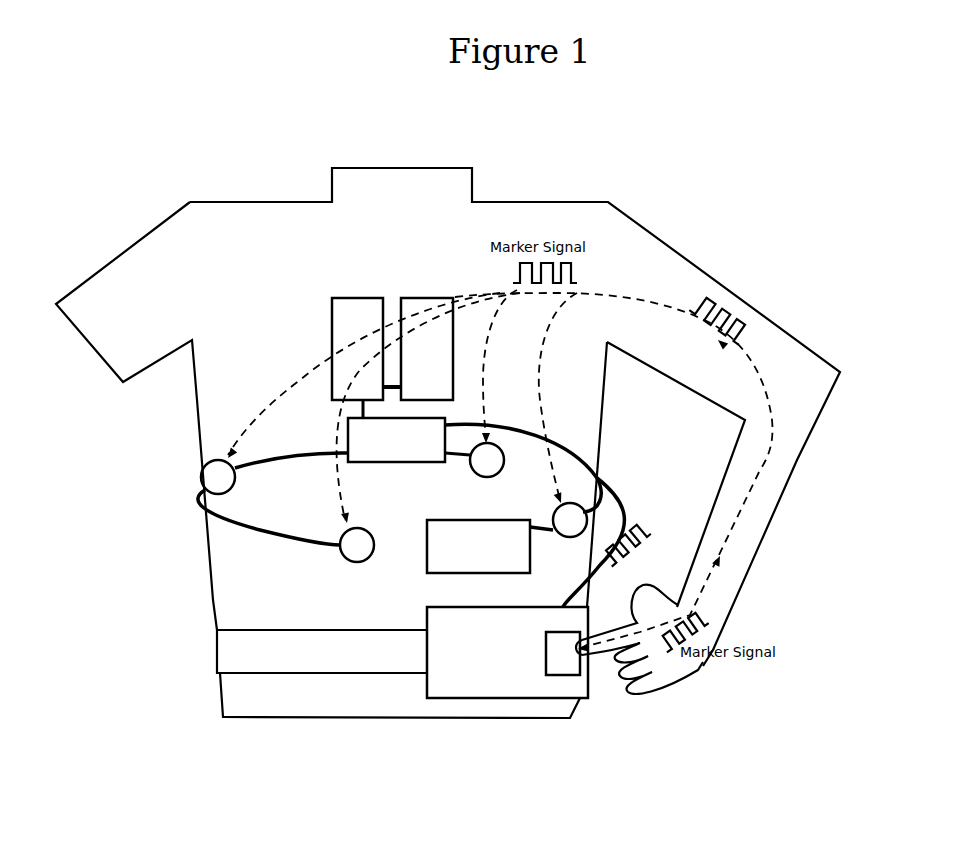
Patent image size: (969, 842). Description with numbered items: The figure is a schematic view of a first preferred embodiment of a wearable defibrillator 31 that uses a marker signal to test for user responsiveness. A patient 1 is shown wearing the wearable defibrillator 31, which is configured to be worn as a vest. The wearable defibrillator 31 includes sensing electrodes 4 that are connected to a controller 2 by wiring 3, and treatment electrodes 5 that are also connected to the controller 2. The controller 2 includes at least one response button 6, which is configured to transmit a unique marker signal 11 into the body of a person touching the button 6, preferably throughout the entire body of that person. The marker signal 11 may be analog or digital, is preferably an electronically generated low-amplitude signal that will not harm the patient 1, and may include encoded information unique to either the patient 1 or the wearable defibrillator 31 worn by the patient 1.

The patient 1 is at (532, 202).
The controller 2 is at (470, 693).
The wiring 3 is at (258, 537).
The sensing electrodes 4 is at (208, 477).
The treatment electrodes 5 is at (335, 313).
The response button 6 is at (562, 668).
The marker signal 11 is at (730, 308).
The wearable defibrillator 31 is at (162, 737).